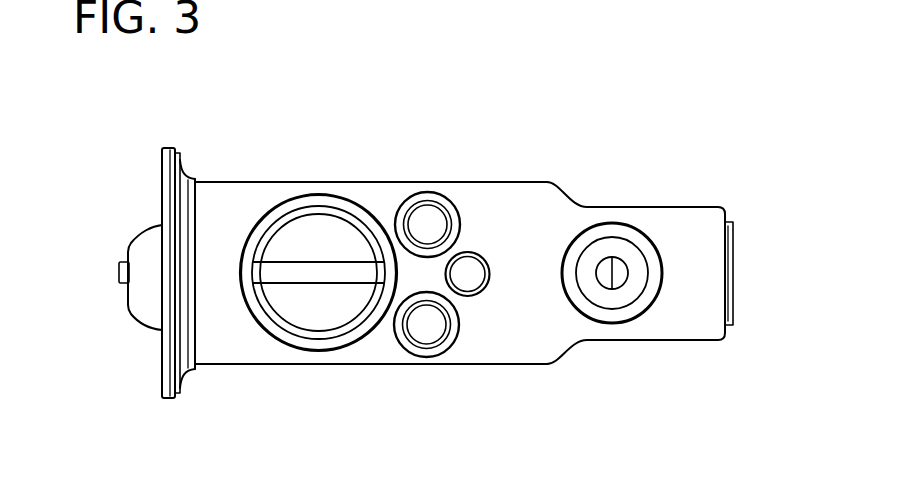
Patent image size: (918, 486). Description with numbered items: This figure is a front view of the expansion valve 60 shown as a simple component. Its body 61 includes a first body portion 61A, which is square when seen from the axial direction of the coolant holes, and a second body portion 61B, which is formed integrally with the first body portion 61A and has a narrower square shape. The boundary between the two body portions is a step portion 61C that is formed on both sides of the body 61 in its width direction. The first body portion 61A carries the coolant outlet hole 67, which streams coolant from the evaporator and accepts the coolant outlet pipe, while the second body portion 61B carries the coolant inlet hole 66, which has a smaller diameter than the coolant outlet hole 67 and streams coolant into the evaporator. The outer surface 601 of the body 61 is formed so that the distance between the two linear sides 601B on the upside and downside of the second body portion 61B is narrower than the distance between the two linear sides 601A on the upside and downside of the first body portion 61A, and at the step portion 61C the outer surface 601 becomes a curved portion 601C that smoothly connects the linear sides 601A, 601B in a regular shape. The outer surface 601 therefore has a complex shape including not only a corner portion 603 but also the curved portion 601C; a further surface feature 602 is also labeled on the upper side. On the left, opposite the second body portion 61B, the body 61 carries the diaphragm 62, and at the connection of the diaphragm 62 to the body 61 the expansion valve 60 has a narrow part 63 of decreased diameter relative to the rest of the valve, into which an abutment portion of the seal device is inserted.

The expansion valve 60 is at (219, 117).
The body 61 is at (516, 352).
The first body portion 61A is at (480, 350).
The second body portion 61B is at (682, 315).
The step portion 61C is at (560, 353).
The outer surface 601 is at (400, 374).
The linear sides 601A is at (346, 365).
The linear sides 601B is at (658, 206).
The curved portion 601C is at (560, 188).
The top surface 602 is at (477, 182).
The corner portion 603 is at (723, 208).
The diaphragm 62 is at (167, 346).
The narrow part 63 is at (196, 372).
The coolant inlet hole 66 is at (617, 300).
The coolant outlet hole 67 is at (302, 317).